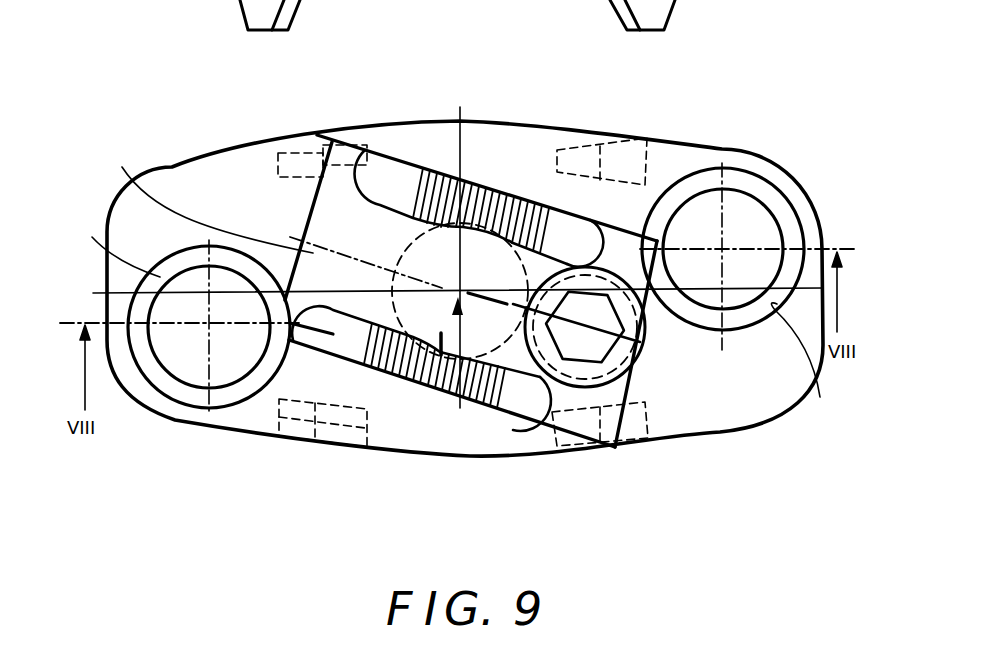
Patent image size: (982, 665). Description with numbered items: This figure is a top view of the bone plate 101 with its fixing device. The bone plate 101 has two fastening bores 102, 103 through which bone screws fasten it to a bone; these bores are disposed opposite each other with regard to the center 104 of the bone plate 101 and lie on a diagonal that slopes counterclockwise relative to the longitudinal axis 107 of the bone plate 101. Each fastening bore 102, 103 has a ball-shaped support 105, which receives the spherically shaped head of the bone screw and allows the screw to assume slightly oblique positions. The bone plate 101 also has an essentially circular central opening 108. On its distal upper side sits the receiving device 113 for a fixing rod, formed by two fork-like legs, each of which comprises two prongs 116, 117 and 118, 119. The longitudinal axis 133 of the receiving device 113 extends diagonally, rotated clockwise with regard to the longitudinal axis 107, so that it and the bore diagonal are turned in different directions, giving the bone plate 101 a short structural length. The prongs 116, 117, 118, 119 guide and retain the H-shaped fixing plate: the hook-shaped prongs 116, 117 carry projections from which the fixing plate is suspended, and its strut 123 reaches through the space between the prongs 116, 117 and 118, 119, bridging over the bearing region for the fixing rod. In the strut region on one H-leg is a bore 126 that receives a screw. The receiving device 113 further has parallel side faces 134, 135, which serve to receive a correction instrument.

The bone plate 101 is at (187, 187).
The fastening bore 102 is at (190, 352).
The fastening bore 103 is at (749, 226).
The center 104 is at (510, 197).
The ball-shaped support 105 is at (456, 319).
The longitudinal axis 107 is at (760, 287).
The central opening 108 is at (440, 258).
The receiving device 113 is at (486, 176).
The prong 116 is at (337, 343).
The prong 117 is at (383, 185).
The prong 118 is at (520, 387).
The prong 119 is at (600, 210).
The strut 123 is at (338, 224).
The bore 126 is at (612, 357).
The longitudinal axis 133 is at (201, 195).
The side face 134 is at (398, 394).
The side face 135 is at (412, 168).